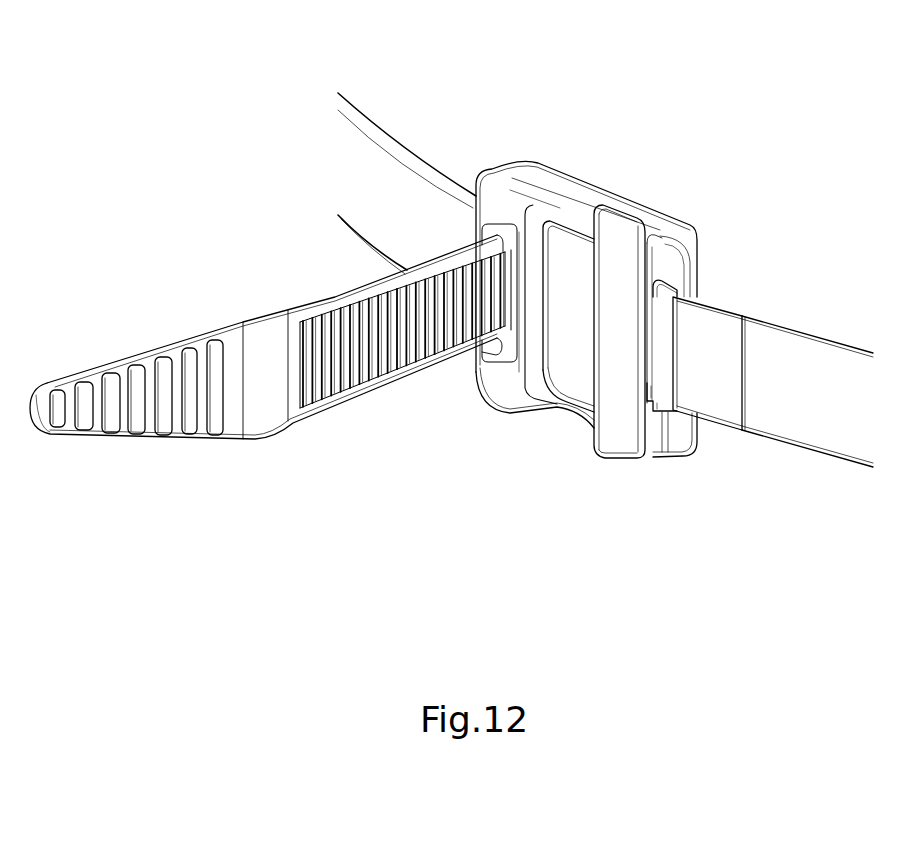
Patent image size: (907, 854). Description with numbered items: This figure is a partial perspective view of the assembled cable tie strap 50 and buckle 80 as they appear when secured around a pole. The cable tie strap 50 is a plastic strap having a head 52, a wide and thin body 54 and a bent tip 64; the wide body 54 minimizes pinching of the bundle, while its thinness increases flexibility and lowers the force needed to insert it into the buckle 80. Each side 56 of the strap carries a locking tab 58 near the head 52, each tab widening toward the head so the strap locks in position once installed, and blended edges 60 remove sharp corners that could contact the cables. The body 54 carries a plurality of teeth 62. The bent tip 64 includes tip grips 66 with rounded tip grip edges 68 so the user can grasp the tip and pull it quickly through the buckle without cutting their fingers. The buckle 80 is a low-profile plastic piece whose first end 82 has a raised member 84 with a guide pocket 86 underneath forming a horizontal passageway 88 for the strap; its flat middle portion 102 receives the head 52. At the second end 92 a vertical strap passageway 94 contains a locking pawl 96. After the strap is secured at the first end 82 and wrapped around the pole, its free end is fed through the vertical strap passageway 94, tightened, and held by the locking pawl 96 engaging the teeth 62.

The cable tie strap 50 is at (806, 293).
The head 52 is at (568, 278).
The body 54 is at (840, 428).
The side 56 is at (724, 312).
The locking tab 58 is at (664, 286).
The blended edges 60 is at (832, 345).
The teeth 62 is at (327, 333).
The bent tip 64 is at (233, 340).
The tip grips 66 is at (162, 422).
The rounded tip grip edges 68 is at (173, 392).
The buckle 80 is at (581, 312).
The first end 82 is at (670, 440).
The raised member 84 is at (615, 440).
The guide pocket 86 is at (654, 292).
The horizontal passageway 88 is at (647, 383).
The second end 92 is at (490, 170).
The vertical strap passageway 94 is at (496, 348).
The locking pawl 96 is at (510, 282).
The middle portion 102 is at (578, 410).